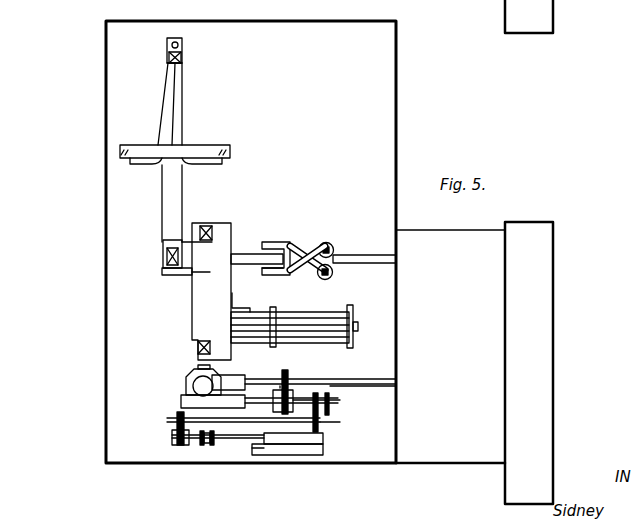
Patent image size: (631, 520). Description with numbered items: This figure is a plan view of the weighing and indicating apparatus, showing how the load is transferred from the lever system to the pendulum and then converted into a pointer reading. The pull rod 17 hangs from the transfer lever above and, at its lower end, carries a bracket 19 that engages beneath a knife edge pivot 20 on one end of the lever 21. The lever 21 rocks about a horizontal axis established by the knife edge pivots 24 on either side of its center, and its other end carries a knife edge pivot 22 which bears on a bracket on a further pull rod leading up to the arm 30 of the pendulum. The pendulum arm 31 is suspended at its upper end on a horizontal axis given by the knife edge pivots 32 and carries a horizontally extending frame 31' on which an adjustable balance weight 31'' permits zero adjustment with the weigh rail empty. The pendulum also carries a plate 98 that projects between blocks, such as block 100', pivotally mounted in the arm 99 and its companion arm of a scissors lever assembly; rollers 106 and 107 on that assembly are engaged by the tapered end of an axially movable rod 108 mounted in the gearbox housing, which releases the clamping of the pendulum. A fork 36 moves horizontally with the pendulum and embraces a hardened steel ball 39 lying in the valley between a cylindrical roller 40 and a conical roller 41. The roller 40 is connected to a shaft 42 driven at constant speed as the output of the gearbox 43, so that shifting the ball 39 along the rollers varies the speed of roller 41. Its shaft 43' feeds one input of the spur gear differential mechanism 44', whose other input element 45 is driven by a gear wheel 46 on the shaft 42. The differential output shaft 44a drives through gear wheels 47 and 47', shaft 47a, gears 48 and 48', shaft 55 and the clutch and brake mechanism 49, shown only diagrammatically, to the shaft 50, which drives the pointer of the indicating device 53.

The pull rod 17 is at (182, 46).
The bracket 19 is at (183, 54).
The knife edge pivot 20 is at (183, 62).
The lever 21 is at (168, 204).
The knife edge pivots 24 is at (210, 165).
The knife edge pivot 22 is at (166, 257).
The arm 30 is at (172, 278).
The pendulum arm 31 is at (197, 291).
The knife edge pivots 32 is at (207, 228).
The plate 98 is at (248, 254).
The arm 99 is at (282, 242).
The block 100' is at (259, 284).
The roller 106 is at (324, 244).
The roller 107 is at (333, 273).
The rod 108 is at (360, 258).
The frame 31' is at (294, 318).
The adjustable balance weight 31'' is at (283, 318).
The shaft 42 is at (372, 373).
The output shaft 44a is at (340, 387).
The roller 40 is at (228, 376).
The fork 36 is at (186, 385).
The ball 39 is at (196, 402).
The roller 41 is at (236, 404).
The gearbox 43 is at (450, 224).
The shaft 43' is at (288, 383).
The gear wheel 46 is at (292, 379).
The spur gear differential mechanism 44' is at (293, 440).
The input element 45 is at (317, 394).
The gear wheel 47 is at (344, 391).
The shaft 47a is at (331, 401).
The gear wheel 47' is at (341, 423).
The gear 48 is at (225, 428).
The gear wheel 48' is at (159, 462).
The shaft 55 is at (192, 441).
The clutch and brake mechanism 49 is at (208, 446).
The indicating device 53 is at (320, 438).
The shaft 50 is at (248, 452).